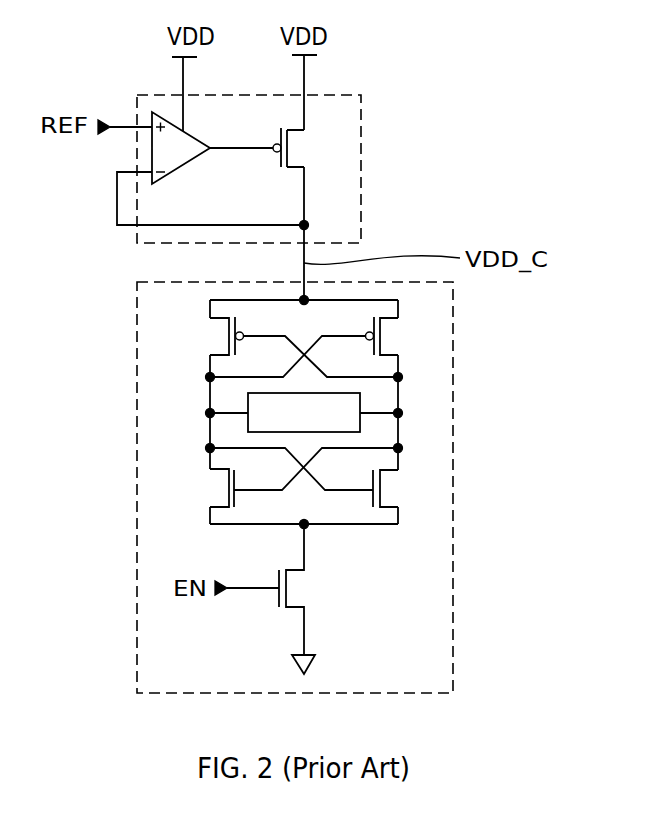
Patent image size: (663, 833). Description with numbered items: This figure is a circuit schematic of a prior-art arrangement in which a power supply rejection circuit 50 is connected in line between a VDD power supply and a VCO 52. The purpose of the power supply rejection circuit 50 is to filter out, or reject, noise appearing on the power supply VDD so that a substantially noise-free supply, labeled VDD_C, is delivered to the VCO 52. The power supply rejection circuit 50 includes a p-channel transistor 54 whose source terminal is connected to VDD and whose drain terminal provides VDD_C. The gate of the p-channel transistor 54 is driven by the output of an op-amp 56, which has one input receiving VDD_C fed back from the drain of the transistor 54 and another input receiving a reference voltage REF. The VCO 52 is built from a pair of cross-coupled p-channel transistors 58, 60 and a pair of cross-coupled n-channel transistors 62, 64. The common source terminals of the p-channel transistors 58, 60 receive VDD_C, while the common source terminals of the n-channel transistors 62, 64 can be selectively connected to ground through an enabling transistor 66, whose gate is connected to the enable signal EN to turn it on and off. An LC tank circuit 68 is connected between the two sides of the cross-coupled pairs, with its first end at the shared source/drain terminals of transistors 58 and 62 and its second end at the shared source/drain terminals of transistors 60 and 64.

The power supply rejection circuit 50 is at (361, 163).
The VCO 52 is at (453, 428).
The p-channel transistor 54 is at (299, 214).
The op-amp 56 is at (182, 170).
The cross-coupled p-channel transistor 58 is at (294, 347).
The cross-coupled p-channel transistor 60 is at (313, 347).
The cross-coupled n-channel transistor 62 is at (294, 477).
The cross-coupled n-channel transistor 64 is at (312, 477).
The enabling transistor 66 is at (275, 589).
The LC tank circuit 68 is at (304, 412).